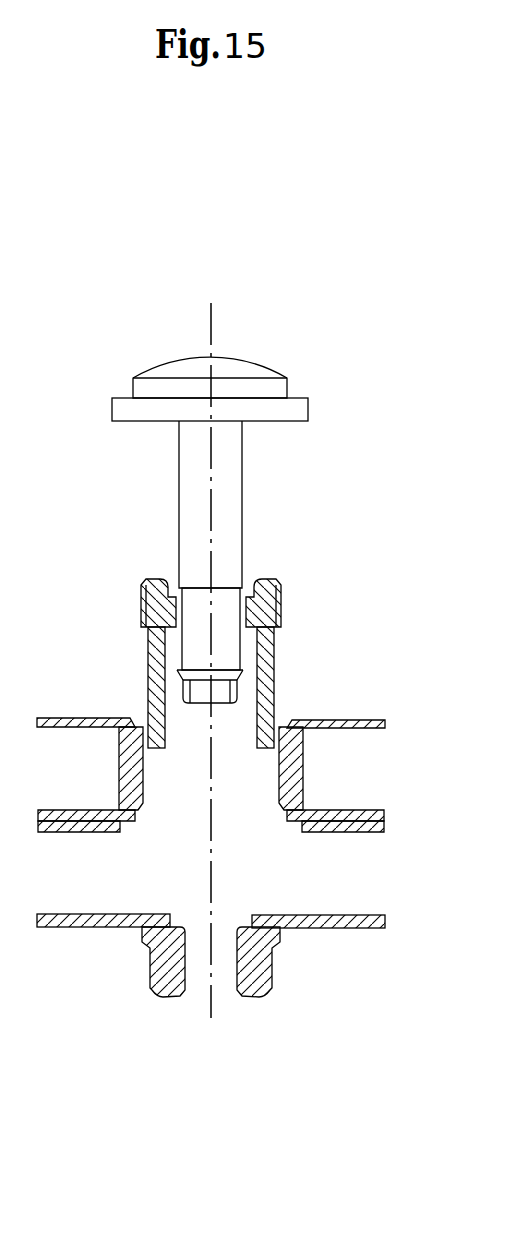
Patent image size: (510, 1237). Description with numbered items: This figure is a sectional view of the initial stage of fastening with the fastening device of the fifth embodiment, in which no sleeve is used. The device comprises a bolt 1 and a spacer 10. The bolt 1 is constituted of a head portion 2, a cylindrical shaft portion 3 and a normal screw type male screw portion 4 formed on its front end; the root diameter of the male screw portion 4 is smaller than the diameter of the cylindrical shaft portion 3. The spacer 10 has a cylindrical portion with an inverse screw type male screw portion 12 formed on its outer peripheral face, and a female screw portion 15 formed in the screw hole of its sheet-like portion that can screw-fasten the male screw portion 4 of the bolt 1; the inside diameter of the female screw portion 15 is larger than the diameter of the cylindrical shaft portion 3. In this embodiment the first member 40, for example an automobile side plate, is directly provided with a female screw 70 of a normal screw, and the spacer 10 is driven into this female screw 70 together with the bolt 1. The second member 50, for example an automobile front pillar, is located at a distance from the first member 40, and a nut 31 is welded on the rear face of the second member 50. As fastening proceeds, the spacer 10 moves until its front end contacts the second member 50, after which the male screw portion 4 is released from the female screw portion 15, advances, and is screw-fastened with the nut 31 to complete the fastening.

The bolt 1 is at (226, 502).
The head portion 2 is at (255, 370).
The cylindrical shaft portion 3 is at (232, 530).
The male screw portion 4 is at (250, 645).
The spacer 10 is at (117, 660).
The male screw portion 12 is at (142, 600).
The female screw portion 15 is at (277, 607).
The first member 40 is at (338, 753).
The female screw 70 is at (277, 780).
The second member 50 is at (355, 928).
The nut 31 is at (256, 992).